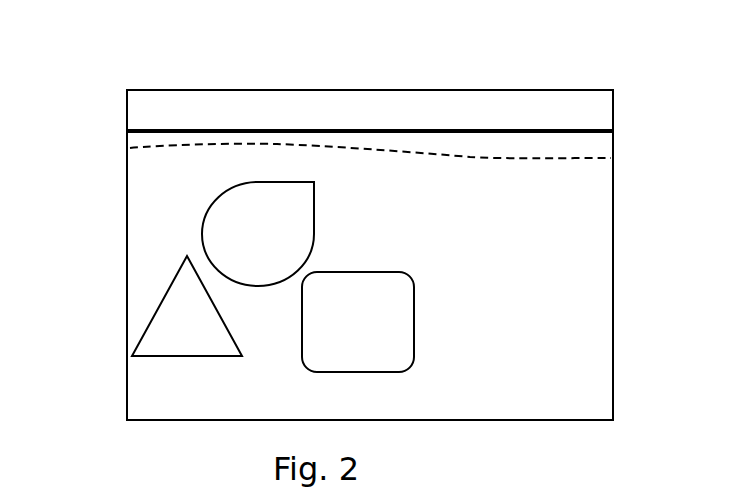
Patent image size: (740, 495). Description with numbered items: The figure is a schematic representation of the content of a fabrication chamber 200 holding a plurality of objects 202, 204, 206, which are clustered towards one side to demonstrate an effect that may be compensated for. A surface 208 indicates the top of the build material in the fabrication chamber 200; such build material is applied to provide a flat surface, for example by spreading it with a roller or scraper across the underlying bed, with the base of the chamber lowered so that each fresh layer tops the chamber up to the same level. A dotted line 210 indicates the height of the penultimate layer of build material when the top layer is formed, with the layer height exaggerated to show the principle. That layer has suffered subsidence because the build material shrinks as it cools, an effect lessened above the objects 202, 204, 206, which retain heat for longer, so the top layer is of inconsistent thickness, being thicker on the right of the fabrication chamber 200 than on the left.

The fabrication chamber 200 is at (163, 90).
The object 202 is at (203, 332).
The object 204 is at (275, 233).
The object 206 is at (375, 321).
The surface 208 is at (131, 131).
The dotted line 210 is at (135, 147).